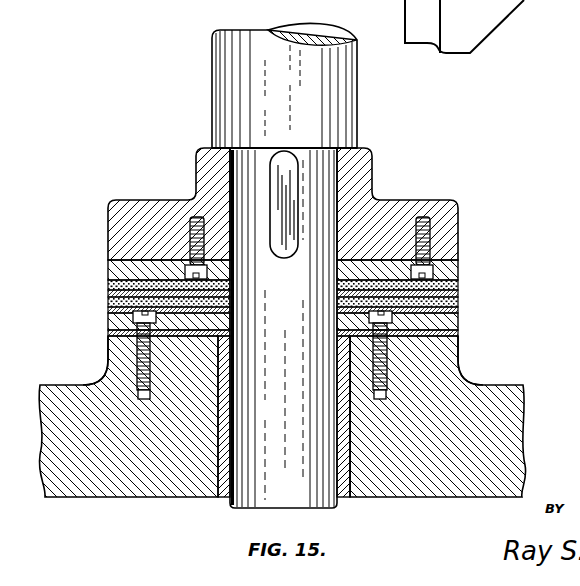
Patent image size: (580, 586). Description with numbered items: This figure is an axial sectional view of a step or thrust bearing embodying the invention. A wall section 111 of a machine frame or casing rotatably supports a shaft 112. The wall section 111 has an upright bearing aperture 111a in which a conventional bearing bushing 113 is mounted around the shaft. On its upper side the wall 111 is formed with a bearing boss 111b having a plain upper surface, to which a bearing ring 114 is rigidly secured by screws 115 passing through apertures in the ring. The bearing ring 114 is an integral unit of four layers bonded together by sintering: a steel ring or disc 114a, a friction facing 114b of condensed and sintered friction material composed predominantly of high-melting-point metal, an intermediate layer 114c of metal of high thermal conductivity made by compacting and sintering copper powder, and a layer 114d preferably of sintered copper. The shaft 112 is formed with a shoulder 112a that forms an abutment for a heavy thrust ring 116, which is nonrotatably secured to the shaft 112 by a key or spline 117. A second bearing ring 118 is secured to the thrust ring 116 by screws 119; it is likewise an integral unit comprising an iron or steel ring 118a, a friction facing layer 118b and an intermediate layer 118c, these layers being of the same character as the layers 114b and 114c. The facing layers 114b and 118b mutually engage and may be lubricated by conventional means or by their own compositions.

The machine frame wall section 111 is at (309, 435).
The bearing aperture 111a is at (353, 457).
The bearing boss 111b is at (450, 350).
The shaft 112 is at (230, 72).
The shoulder 112a is at (238, 152).
The bearing bushing 113 is at (224, 458).
The bearing ring 114 is at (282, 331).
The steel ring 114a is at (108, 332).
The friction facing 114b is at (108, 302).
The intermediate layer 114c is at (108, 310).
The sintered copper layer 114d is at (108, 323).
The screws 115 is at (152, 372).
The thrust ring 116 is at (314, 204).
The key or spline 117 is at (281, 258).
The bearing ring 118 is at (289, 253).
The iron or steel ring 118a is at (130, 262).
The friction facing layer 118b is at (108, 293).
The intermediate layer 118c is at (108, 284).
The screws 119 is at (195, 215).